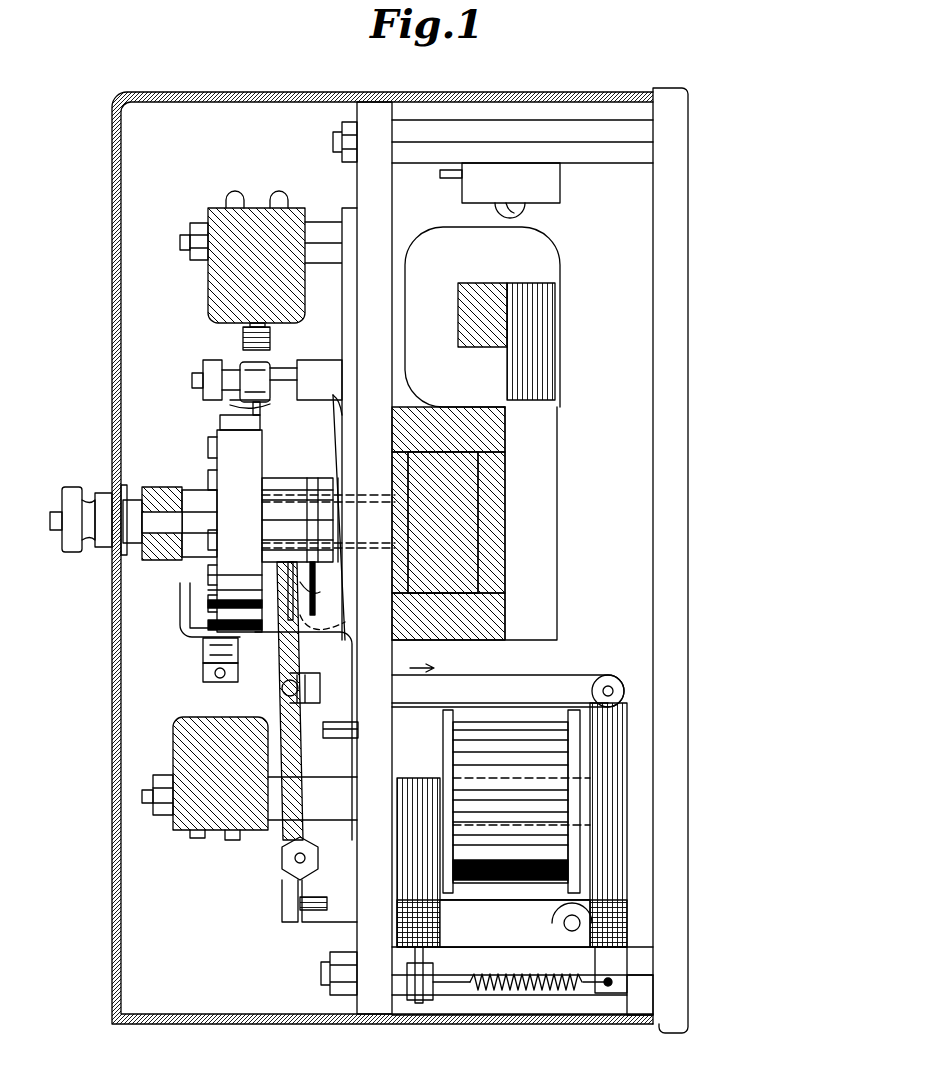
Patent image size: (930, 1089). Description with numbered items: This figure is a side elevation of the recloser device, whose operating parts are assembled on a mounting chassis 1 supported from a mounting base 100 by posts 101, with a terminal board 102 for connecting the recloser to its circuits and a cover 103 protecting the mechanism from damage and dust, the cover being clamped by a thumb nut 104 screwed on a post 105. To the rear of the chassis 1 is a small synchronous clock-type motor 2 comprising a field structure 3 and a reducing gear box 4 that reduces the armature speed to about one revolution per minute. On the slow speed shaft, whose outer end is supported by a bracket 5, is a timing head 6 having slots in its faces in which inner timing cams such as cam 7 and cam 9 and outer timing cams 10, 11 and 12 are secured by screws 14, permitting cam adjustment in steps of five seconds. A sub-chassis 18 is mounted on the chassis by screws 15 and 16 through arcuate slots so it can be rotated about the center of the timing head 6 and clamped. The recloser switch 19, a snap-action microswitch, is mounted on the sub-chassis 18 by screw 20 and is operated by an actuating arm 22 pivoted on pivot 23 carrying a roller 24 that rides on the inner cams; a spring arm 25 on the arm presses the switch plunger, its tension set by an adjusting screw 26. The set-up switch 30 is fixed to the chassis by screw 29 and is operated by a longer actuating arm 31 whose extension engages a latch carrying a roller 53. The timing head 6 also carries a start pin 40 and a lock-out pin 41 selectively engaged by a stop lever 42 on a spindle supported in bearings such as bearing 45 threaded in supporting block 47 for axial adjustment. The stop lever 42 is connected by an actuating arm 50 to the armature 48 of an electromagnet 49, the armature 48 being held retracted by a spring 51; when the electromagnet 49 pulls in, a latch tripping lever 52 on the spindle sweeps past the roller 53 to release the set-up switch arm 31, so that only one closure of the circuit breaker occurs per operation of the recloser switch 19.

The mounting chassis 1 is at (376, 110).
The motor 2 is at (535, 553).
The field structure 3 is at (538, 398).
The reducing gear box 4 is at (465, 505).
The bracket 5 is at (162, 562).
The timing head 6 is at (262, 452).
The inner timing cam 7 is at (260, 410).
The inner timing cam 9 is at (250, 638).
The outer timing cam 10 is at (203, 648).
The outer timing cam 11 is at (217, 568).
The outer timing cam 12 is at (220, 420).
The screws 14 is at (210, 455).
The screw 15 is at (334, 410).
The screw 16 is at (327, 395).
The sub-chassis 18 is at (345, 312).
The recloser switch 19 is at (222, 290).
The screw 20 is at (195, 235).
The actuating arm 22 is at (245, 368).
The pivot 23 is at (192, 379).
The roller 24 is at (232, 404).
The spring arm 25 is at (243, 340).
The adjusting screw 26 is at (272, 358).
The screw 29 is at (152, 815).
The set-up switch 30 is at (182, 752).
The actuating arm 31 is at (203, 678).
The start pin 40 is at (330, 580).
The lock-out pin 41 is at (315, 595).
The stop lever 42 is at (282, 706).
The bearing 45 is at (285, 862).
The supporting block 47 is at (318, 905).
The armature 48 is at (618, 805).
The electromagnet 49 is at (520, 745).
The actuating arm 50 is at (490, 692).
The spring 51 is at (517, 988).
The latch tripping lever 52 is at (316, 673).
The roller 53 is at (345, 625).
The mounting base 100 is at (676, 345).
The posts 101 is at (545, 130).
The terminal board 102 is at (562, 190).
The cover 103 is at (112, 280).
The thumb nut 104 is at (73, 552).
The post 105 is at (192, 495).